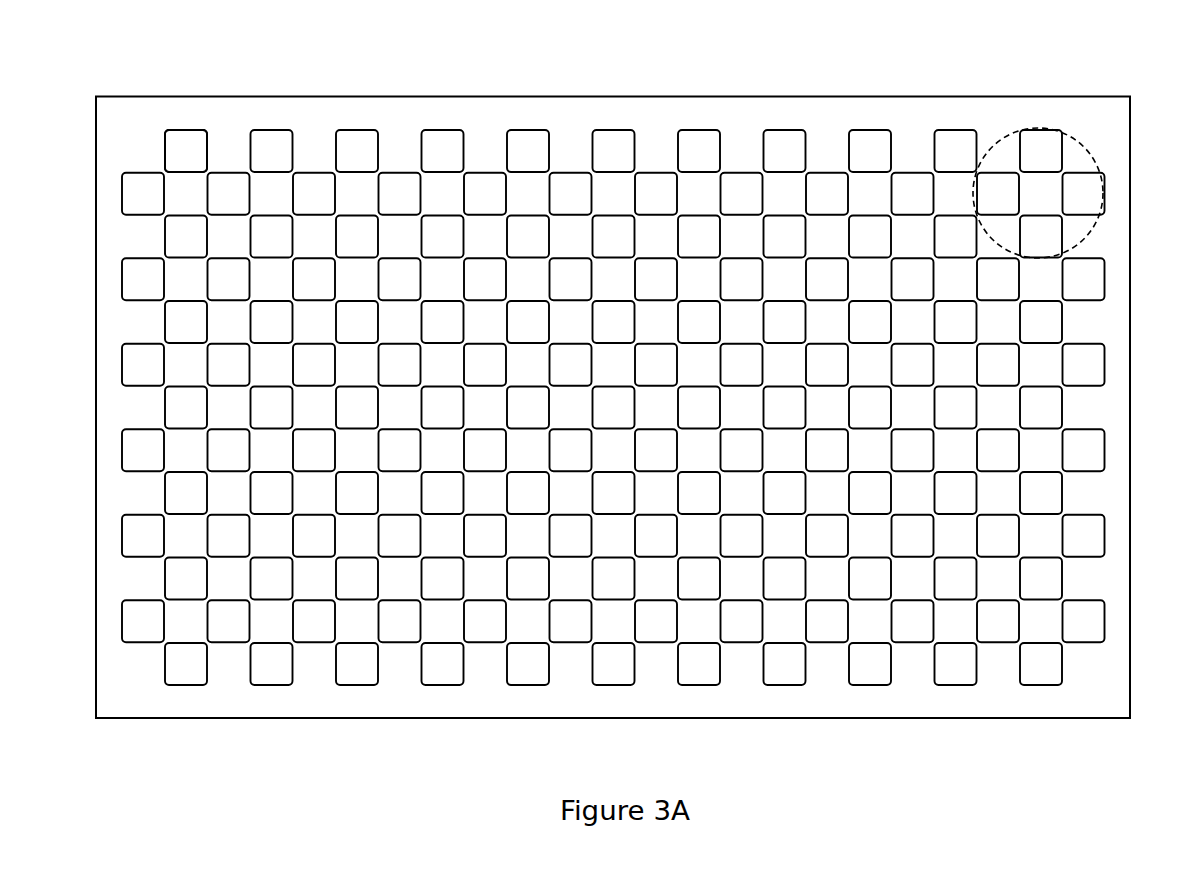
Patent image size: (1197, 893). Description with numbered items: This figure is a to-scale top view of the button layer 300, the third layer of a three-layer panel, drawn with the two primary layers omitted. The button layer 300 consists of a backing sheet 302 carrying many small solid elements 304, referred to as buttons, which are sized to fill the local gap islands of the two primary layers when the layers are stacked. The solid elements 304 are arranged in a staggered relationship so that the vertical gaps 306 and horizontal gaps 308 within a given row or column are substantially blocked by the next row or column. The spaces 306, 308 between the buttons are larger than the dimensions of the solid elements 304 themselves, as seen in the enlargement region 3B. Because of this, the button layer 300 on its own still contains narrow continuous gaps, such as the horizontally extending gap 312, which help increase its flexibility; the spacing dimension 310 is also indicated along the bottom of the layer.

The button layer 300 is at (638, 393).
The backing sheet 302 is at (322, 96).
The solid element 304 is at (203, 160).
The vertical gap 306 is at (570, 130).
The horizontal gap 308 is at (1080, 408).
The horizontal spacing 310 is at (950, 746).
The horizontally extending narrow gap 312 is at (1150, 627).
The enlargement region 3B is at (1005, 130).